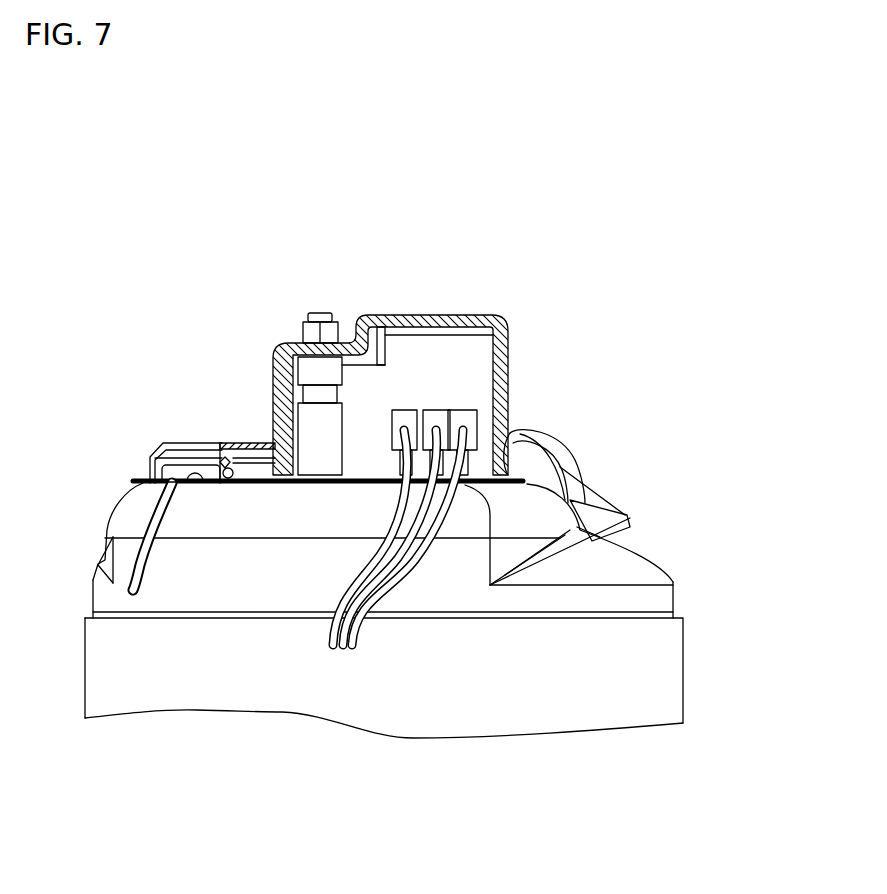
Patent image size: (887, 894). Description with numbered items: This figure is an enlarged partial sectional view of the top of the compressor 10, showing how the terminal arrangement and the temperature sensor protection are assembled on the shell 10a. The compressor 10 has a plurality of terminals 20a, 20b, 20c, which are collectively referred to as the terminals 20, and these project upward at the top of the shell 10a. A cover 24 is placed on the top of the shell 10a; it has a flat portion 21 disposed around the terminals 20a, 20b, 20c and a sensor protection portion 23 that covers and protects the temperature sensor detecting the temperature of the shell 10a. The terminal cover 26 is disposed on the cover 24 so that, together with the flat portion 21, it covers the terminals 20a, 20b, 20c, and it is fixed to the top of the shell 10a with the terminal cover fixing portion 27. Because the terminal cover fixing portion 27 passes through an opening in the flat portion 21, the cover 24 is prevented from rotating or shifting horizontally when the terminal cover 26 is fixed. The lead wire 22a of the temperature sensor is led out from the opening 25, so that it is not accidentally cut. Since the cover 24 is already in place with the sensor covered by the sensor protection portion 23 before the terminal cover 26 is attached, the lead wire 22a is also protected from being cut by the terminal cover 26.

The compressor 10 is at (676, 438).
The shell 10a is at (677, 573).
The terminals 20 is at (430, 404).
The terminal 20a is at (468, 410).
The terminal 20b is at (442, 410).
The terminal 20c is at (407, 410).
The flat portion 21 is at (517, 433).
The lead wire 22a is at (168, 508).
The sensor protection portion 23 is at (163, 443).
The cover 24 is at (246, 440).
The opening 25 is at (213, 485).
The terminal cover 26 is at (500, 314).
The terminal cover fixing portion 27 is at (315, 313).